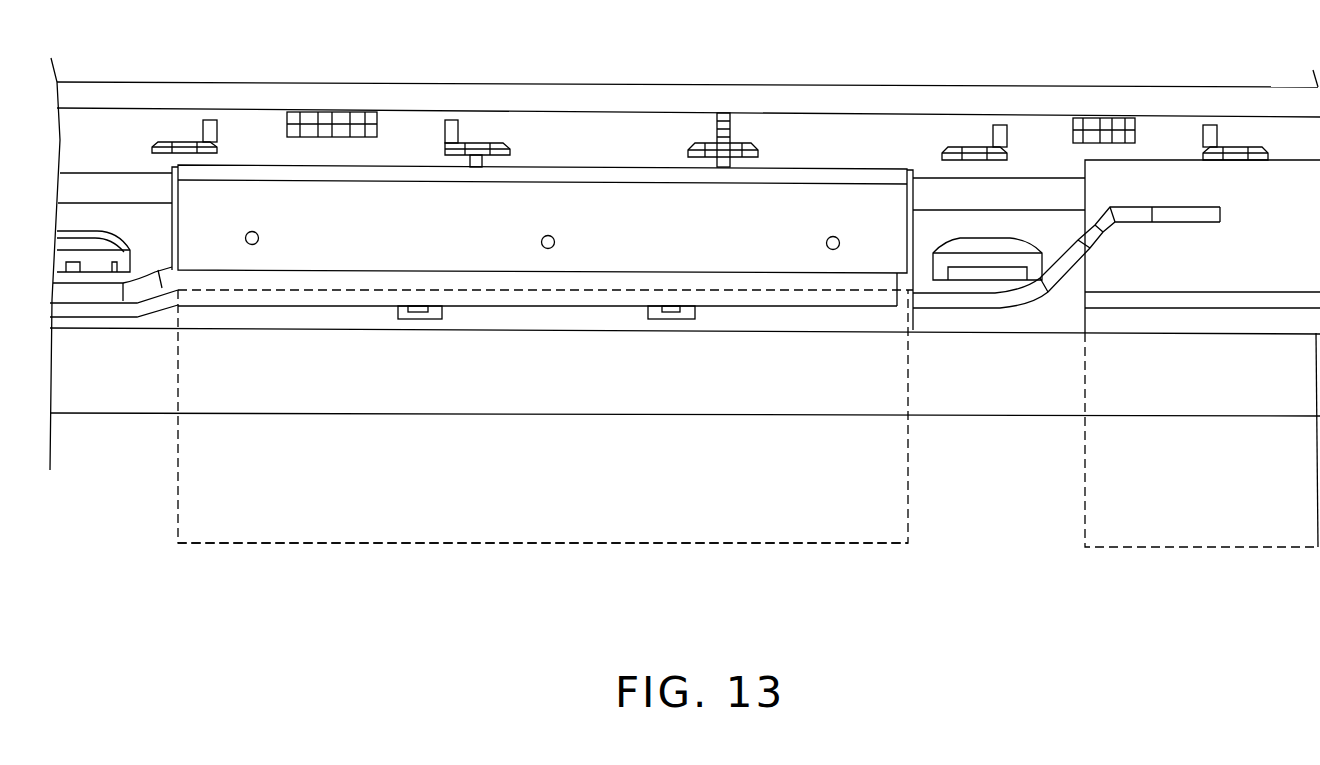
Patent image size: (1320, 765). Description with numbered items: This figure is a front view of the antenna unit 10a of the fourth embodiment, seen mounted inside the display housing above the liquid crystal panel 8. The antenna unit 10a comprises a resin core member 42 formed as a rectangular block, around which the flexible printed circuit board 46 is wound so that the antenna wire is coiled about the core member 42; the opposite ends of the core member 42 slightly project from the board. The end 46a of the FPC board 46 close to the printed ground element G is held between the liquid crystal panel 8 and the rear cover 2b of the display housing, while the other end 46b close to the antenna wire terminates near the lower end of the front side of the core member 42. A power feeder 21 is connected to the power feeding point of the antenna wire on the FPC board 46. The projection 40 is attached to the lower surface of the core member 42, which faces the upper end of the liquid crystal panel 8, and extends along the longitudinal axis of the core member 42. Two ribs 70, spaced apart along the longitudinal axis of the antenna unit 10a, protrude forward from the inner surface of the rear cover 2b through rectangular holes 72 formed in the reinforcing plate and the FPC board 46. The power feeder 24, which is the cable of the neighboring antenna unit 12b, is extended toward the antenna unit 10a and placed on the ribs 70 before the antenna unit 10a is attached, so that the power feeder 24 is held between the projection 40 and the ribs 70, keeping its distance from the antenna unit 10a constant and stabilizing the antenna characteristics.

The rear cover 2b is at (426, 92).
The antenna unit 10a is at (665, 140).
The antenna unit 12b is at (1182, 160).
The liquid crystal panel 8 is at (1284, 332).
The flexible printed circuit board 46 is at (296, 172).
The core member 42 is at (168, 213).
The power feeder 21 is at (88, 292).
The projection 40 is at (222, 308).
The end of the FPC board 46b is at (548, 308).
The rib 70 is at (418, 319).
The rectangular hole 72 is at (442, 319).
The power feeder 24 is at (1032, 297).
The ground element G is at (908, 500).
The end of the FPC board 46a is at (635, 525).